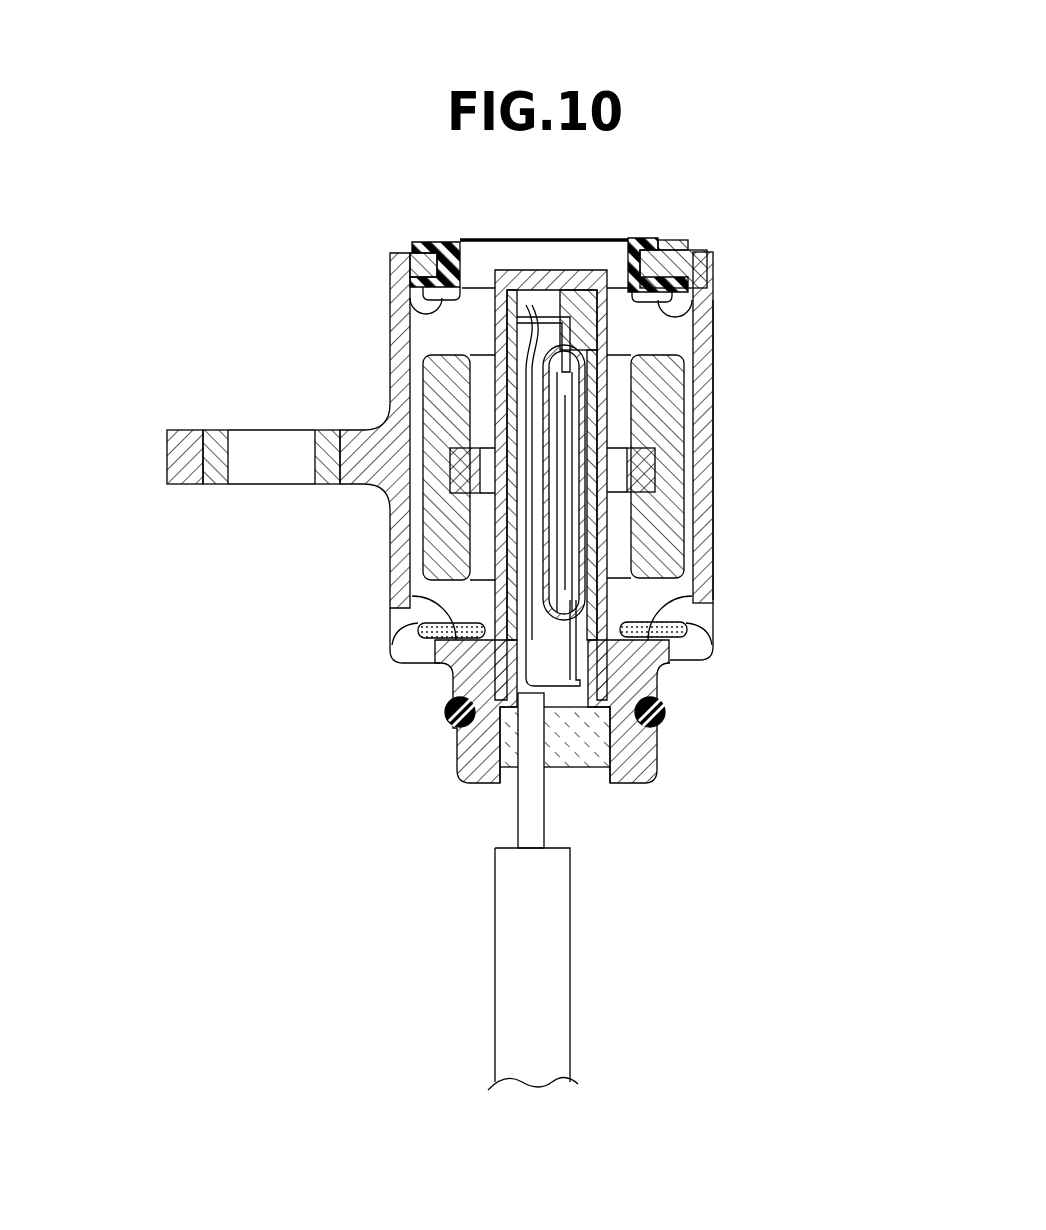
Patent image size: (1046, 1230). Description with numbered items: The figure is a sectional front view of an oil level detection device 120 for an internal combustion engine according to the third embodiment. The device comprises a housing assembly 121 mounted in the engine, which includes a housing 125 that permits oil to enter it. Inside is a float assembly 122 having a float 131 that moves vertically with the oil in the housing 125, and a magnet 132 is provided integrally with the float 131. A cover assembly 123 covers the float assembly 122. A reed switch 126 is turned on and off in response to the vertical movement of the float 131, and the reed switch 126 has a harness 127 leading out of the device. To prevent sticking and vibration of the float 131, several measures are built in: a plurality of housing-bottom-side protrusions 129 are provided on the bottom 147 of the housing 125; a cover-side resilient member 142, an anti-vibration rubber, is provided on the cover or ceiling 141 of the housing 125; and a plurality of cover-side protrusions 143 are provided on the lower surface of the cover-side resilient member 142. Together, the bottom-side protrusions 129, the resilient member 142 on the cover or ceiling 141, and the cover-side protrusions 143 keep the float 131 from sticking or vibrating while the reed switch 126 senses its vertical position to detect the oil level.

The oil level detection device 120 is at (172, 72).
The housing assembly 121 is at (728, 360).
The float assembly 122 is at (712, 407).
The cover assembly 123 is at (688, 222).
The housing 125 is at (720, 463).
The reed switch 126 is at (577, 523).
The harness 127 is at (590, 960).
The housing-bottom-side protrusions 129 is at (418, 622).
The float 131 is at (675, 523).
The magnet 132 is at (445, 415).
The cover or ceiling of the housing 141 is at (405, 262).
The cover-side resilient member 142 is at (635, 238).
The cover-side protrusions 143 is at (383, 298).
The bottom of the housing 147 is at (425, 595).